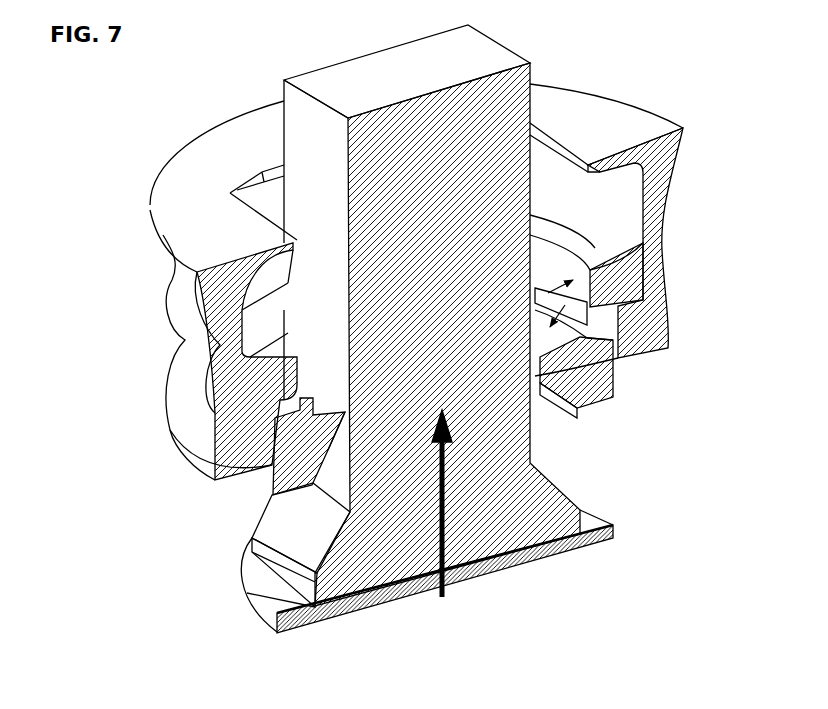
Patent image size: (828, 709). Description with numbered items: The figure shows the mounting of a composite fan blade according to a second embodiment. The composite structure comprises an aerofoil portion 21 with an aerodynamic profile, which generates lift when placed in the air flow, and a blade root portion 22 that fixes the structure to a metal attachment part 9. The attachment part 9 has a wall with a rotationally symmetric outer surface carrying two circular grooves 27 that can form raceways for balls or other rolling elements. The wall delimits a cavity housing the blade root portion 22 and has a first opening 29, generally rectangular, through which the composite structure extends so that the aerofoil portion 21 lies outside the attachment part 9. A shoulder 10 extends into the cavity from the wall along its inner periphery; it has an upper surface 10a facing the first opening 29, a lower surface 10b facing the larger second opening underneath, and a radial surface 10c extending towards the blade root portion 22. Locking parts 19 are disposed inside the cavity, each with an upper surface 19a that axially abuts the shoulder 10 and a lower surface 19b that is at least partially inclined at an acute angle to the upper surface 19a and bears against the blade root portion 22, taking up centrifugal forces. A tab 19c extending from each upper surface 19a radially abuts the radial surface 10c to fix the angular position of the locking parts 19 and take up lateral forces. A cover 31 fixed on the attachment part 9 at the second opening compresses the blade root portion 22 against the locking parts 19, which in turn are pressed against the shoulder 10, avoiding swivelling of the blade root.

The attachment part 9 is at (608, 117).
The shoulder 10 is at (298, 398).
The upper surface of the shoulder 10a is at (595, 245).
The lower surface of the shoulder 10b is at (650, 312).
The radial surface of the shoulder 10c is at (582, 318).
The locking part 19 is at (318, 405).
The upper surface of the locking part 19a is at (592, 362).
The lower surface of the locking part 19b is at (553, 400).
The tab 19c is at (338, 452).
The aerofoil portion 21 is at (448, 315).
The blade root portion 22 is at (300, 527).
The circular grooves 27 is at (158, 262).
The first opening 29 is at (258, 190).
The cover 31 is at (505, 567).